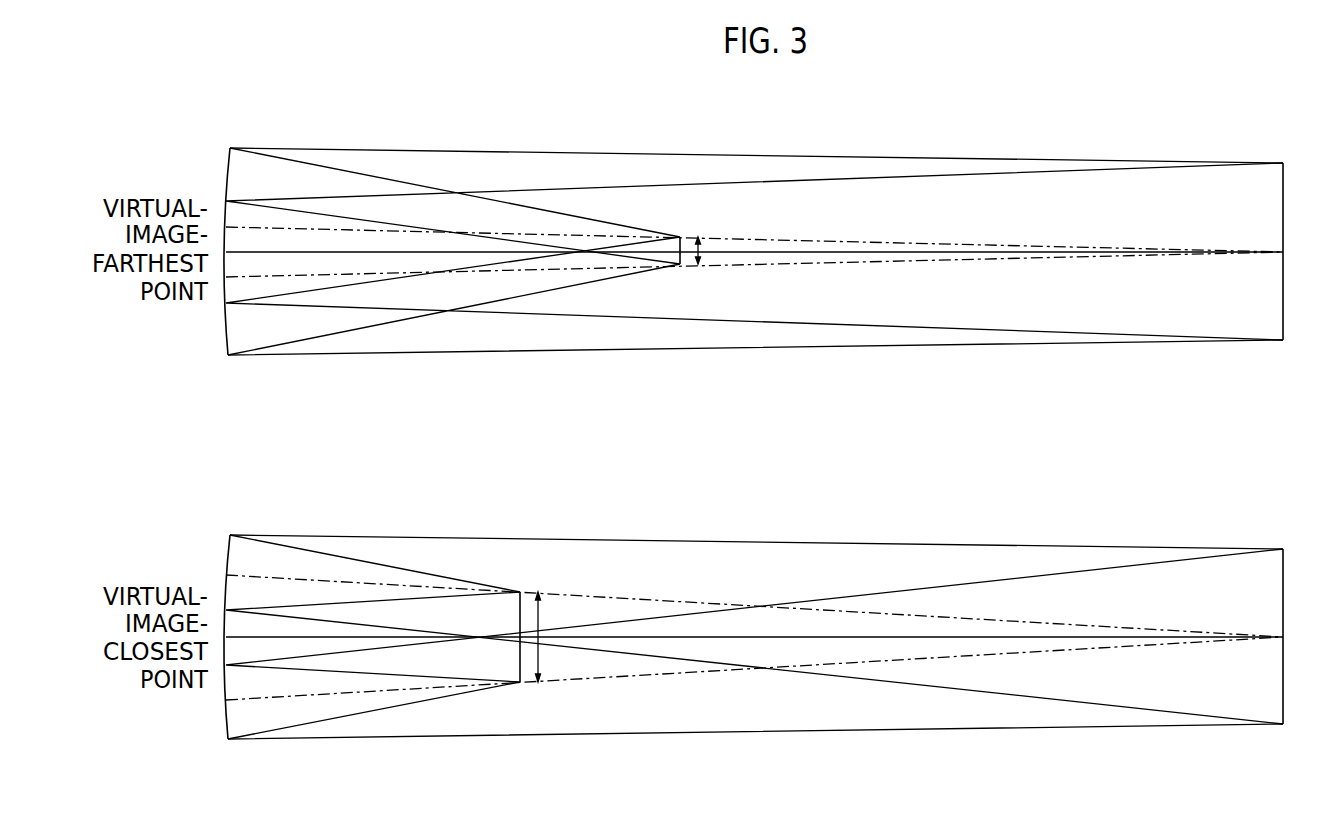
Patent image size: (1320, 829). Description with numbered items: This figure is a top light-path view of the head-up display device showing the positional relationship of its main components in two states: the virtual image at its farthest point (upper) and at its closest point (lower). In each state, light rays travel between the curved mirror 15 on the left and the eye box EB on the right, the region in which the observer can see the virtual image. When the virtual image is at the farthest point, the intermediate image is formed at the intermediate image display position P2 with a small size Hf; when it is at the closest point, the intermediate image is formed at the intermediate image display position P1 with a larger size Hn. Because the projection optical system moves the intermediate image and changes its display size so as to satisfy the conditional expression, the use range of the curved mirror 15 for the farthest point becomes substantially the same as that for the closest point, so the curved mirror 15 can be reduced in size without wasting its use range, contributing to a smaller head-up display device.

The curved mirror 15 is at (226, 334).
The eye box EB is at (1284, 164).
The intermediate image display position P2 is at (681, 237).
The size of the primary display image at the farthest point Hf is at (698, 255).
The intermediate image display position P1 is at (522, 590).
The size of the primary display image at the closest point Hn is at (540, 657).